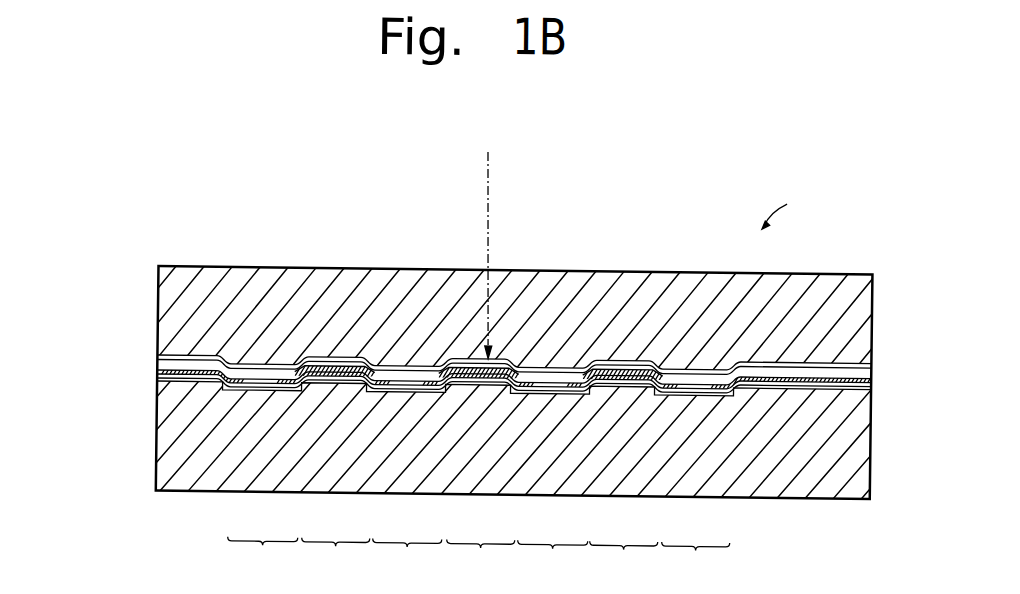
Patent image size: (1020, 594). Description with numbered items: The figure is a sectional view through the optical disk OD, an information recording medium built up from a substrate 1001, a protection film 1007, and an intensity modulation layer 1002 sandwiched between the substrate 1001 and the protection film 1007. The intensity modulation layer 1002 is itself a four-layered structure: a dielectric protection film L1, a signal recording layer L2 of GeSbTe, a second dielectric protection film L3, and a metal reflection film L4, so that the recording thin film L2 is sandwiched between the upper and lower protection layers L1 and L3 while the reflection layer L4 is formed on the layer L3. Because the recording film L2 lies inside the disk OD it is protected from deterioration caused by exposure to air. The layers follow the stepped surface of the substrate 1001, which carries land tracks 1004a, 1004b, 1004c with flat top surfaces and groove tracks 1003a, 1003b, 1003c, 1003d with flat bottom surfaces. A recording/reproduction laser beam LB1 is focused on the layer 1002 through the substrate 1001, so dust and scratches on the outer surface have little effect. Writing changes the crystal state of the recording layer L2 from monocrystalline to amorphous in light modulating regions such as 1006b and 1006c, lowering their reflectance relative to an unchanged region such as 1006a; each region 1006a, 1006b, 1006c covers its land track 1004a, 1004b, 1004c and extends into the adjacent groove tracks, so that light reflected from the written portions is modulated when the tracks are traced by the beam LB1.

The substrate 1001 is at (170, 302).
The intensity modulation layer 1002 is at (458, 374).
The dielectric protection film L1 is at (161, 356).
The signal recording layer L2 is at (161, 366).
The dielectric protection film L3 is at (161, 372).
The metal reflection film L4 is at (488, 402).
The protection film 1007 is at (172, 442).
The light modulating region 1006a is at (334, 366).
The light modulating region 1006b is at (474, 374).
The light modulating region 1006c is at (616, 372).
The groove track 1003a is at (262, 556).
The groove track 1003b is at (406, 558).
The groove track 1003c is at (552, 559).
The groove track 1003d is at (695, 561).
The land track 1004a is at (335, 557).
The land track 1004b is at (480, 558).
The land track 1004c is at (623, 560).
The laser light beam LB1 is at (489, 178).
The optical disk OD is at (828, 188).